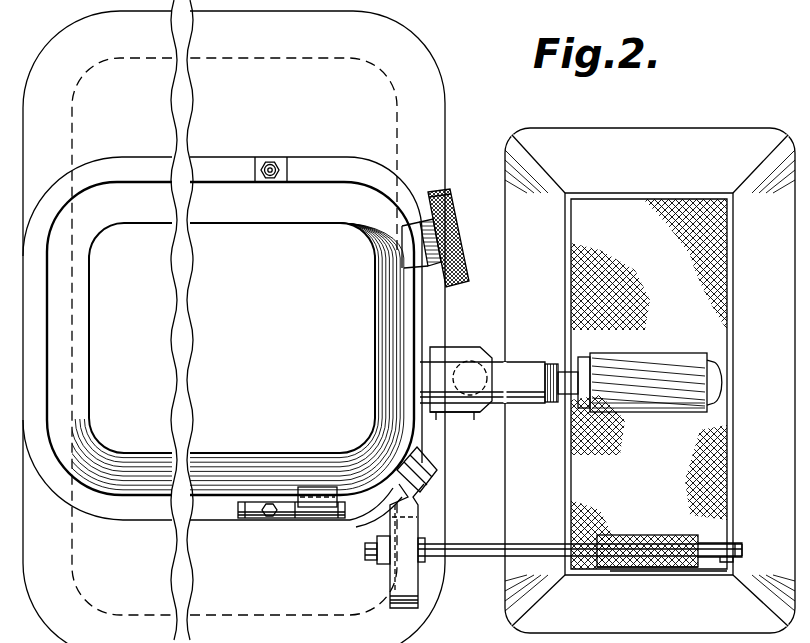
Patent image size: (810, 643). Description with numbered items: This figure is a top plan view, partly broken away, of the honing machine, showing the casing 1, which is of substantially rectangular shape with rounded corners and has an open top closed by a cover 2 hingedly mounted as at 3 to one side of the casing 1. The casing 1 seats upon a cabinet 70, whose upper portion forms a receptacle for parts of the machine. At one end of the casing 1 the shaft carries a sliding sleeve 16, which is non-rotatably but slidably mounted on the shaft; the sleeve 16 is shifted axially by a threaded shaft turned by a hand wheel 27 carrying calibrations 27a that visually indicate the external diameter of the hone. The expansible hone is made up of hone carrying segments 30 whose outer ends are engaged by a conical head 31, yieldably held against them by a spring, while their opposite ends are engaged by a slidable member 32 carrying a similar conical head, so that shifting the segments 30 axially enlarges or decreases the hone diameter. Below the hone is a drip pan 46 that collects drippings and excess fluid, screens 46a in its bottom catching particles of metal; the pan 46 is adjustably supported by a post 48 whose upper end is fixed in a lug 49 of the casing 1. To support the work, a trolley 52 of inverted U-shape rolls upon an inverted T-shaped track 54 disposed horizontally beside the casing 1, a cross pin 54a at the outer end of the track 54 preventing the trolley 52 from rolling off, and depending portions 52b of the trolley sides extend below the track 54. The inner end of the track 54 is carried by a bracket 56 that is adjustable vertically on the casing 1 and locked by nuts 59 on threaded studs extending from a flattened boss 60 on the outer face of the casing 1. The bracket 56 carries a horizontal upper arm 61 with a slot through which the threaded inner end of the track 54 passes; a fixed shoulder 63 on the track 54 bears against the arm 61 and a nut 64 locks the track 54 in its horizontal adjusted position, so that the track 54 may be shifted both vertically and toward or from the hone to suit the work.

The casing 1 is at (336, 177).
The cover 2 is at (228, 356).
The hinge 3 is at (298, 514).
The sliding sleeve 16 is at (518, 374).
The hand wheel 27 is at (452, 287).
The calibrations 27a is at (440, 192).
The hone carrying segments 30 is at (662, 353).
The conical head 31 is at (720, 372).
The slidable member 32 is at (550, 404).
The pan 46 is at (640, 150).
The screens 46a is at (707, 198).
The post 48 is at (467, 362).
The lug 49 is at (462, 413).
The trolley 52 is at (688, 568).
The depending portions 52b is at (630, 535).
The track 54 is at (486, 558).
The cross pin 54a is at (740, 544).
The bracket 56 is at (430, 458).
The nuts 59 is at (434, 478).
The flattened boss 60 is at (373, 503).
The upper arm 61 is at (396, 598).
The shoulder 63 is at (425, 517).
The nut 64 is at (372, 556).
The cabinet 70 is at (418, 59).